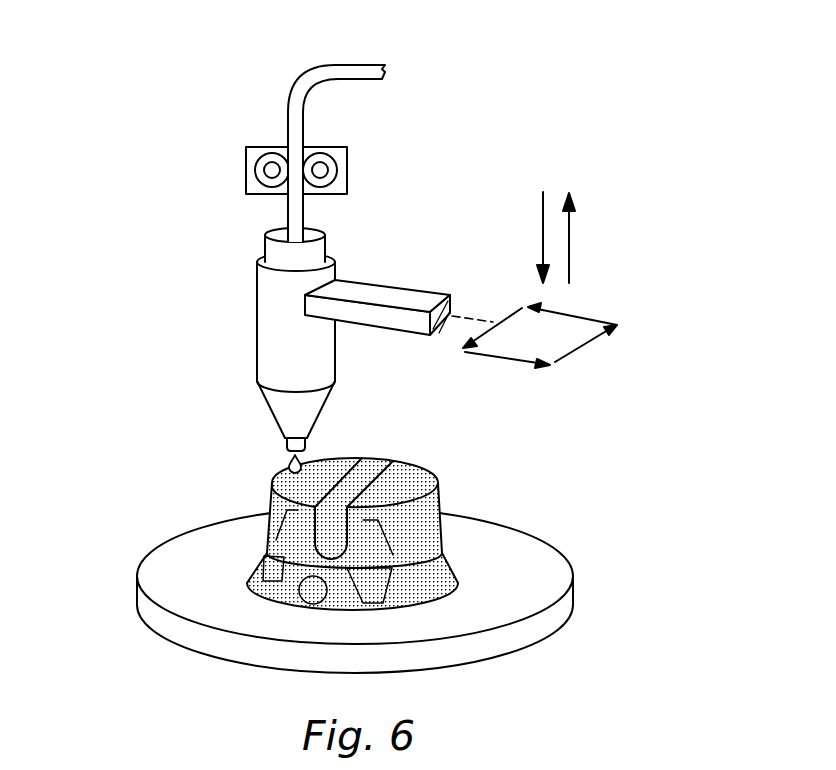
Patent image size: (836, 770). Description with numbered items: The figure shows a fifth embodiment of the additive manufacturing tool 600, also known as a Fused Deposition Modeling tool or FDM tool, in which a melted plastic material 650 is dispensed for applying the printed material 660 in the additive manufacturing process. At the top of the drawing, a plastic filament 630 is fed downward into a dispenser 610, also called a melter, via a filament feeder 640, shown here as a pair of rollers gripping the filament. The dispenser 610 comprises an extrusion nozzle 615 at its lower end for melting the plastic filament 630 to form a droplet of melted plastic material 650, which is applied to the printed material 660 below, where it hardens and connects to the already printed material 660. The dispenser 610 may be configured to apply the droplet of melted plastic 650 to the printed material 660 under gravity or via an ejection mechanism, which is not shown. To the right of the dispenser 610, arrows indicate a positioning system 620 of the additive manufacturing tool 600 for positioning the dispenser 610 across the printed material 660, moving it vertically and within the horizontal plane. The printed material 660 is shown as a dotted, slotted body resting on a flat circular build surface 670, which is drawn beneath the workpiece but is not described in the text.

The additive manufacturing tool 600 is at (578, 78).
The dispenser 610 is at (272, 327).
The extrusion nozzle 615 is at (287, 442).
The positioning system 620 is at (628, 183).
The plastic filament 630 is at (300, 90).
The filament feeder 640 is at (246, 157).
The melted plastic material 650 is at (291, 460).
The printed material 660 is at (430, 528).
The build platform 670 is at (163, 553).